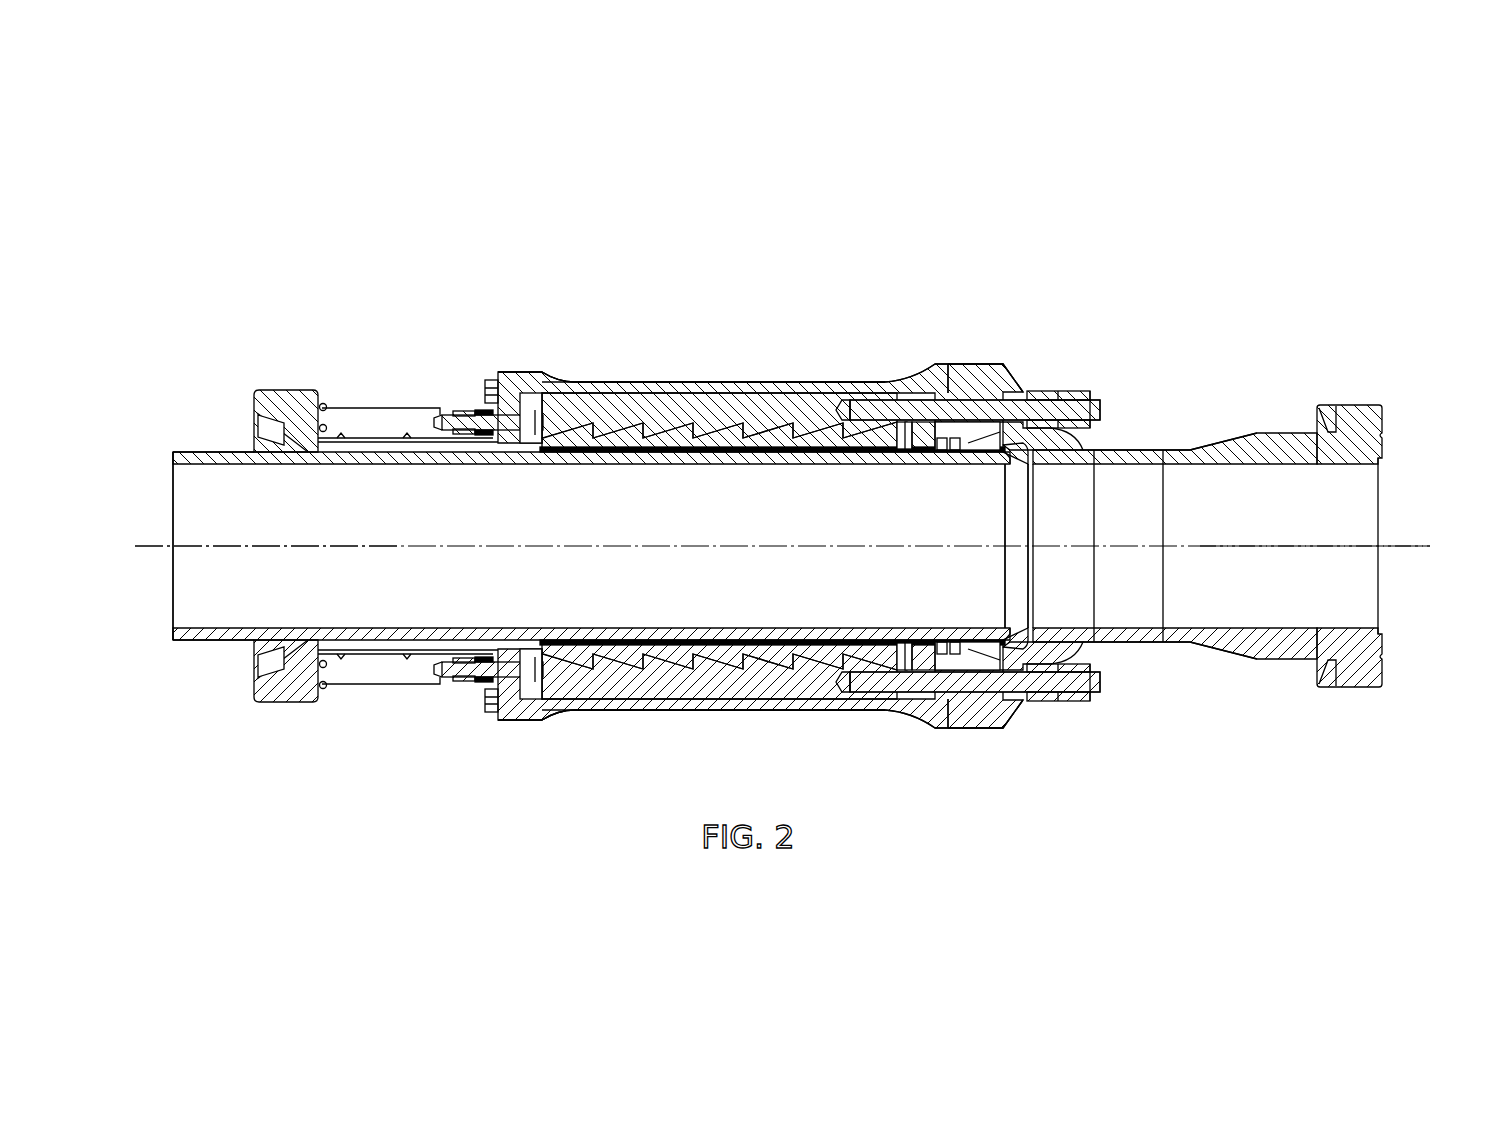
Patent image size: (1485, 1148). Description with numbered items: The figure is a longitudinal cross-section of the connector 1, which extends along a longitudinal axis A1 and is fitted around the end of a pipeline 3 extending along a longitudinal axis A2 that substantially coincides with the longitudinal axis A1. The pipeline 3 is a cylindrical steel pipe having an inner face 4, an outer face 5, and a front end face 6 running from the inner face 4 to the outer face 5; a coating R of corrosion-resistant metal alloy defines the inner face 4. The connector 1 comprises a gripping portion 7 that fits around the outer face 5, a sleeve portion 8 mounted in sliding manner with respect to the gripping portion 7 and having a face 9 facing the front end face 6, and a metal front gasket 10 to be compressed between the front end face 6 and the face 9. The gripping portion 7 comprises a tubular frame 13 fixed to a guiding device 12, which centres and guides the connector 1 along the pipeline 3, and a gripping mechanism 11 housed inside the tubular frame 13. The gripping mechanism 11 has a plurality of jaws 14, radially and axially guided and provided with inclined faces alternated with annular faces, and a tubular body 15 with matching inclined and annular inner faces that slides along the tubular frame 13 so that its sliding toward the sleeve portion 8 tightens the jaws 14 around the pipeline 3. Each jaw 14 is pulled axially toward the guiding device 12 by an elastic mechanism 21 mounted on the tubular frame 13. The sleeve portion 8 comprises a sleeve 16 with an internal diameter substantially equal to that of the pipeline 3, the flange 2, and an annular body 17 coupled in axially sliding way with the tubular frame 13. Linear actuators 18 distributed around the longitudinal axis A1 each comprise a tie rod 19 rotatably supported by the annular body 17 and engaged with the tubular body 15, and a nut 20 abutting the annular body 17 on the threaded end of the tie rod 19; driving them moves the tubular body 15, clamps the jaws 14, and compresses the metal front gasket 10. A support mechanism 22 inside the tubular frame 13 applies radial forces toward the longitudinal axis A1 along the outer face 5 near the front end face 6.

The connector 1 is at (1190, 240).
The flange 2 is at (1355, 400).
The pipeline 3 is at (183, 420).
The inner face 4 is at (686, 470).
The outer face 5 is at (215, 438).
The front end face 6 is at (1040, 622).
The gripping portion 7 is at (717, 370).
The sleeve portion 8 is at (1238, 410).
The face 9 is at (1004, 465).
The metal front gasket 10 is at (1020, 583).
The gripping mechanism 11 is at (642, 715).
The guiding device 12 is at (382, 398).
The tubular frame 13 is at (792, 378).
The jaws 14 is at (828, 432).
The tubular body 15 is at (725, 690).
The sleeve 16 is at (1133, 642).
The annular body 17 is at (985, 372).
The linear actuators 18 is at (1130, 410).
The tie rod 19 is at (930, 405).
The nut 20 is at (1070, 388).
The elastic mechanism 21 is at (467, 393).
The support mechanism 22 is at (936, 462).
The coating R is at (395, 465).
The longitudinal axis A1 is at (1432, 546).
The longitudinal axis A2 is at (152, 546).